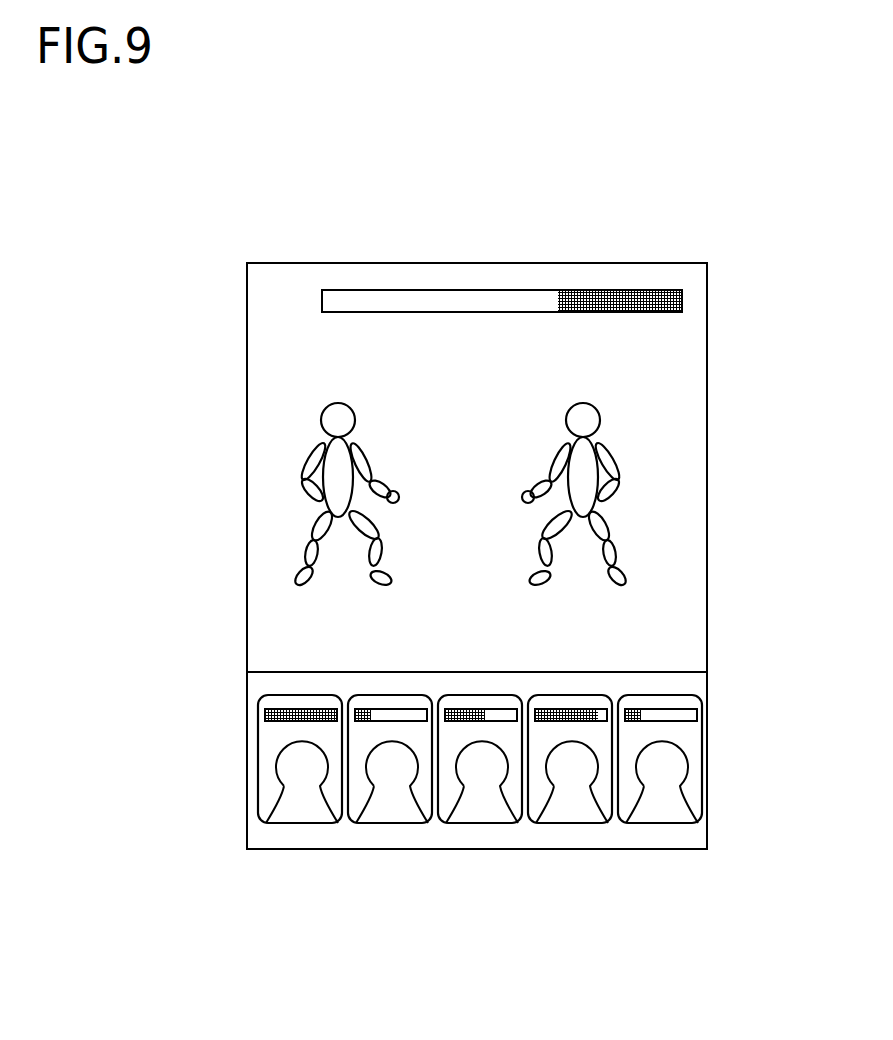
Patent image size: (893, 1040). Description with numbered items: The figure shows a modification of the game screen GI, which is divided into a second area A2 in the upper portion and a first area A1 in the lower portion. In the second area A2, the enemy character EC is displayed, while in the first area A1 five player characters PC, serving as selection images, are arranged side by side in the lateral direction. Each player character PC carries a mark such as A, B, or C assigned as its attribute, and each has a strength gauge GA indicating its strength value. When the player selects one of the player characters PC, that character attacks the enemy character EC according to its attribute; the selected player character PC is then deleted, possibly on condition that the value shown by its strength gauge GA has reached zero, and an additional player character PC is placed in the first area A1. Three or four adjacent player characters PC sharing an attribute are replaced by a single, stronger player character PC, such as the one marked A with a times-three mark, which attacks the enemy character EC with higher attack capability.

The game screen GI is at (522, 247).
The second area A2 is at (682, 369).
The first area A1 is at (682, 684).
The enemy character EC is at (360, 386).
The player character PC is at (704, 760).
The strength gauge GA is at (698, 716).